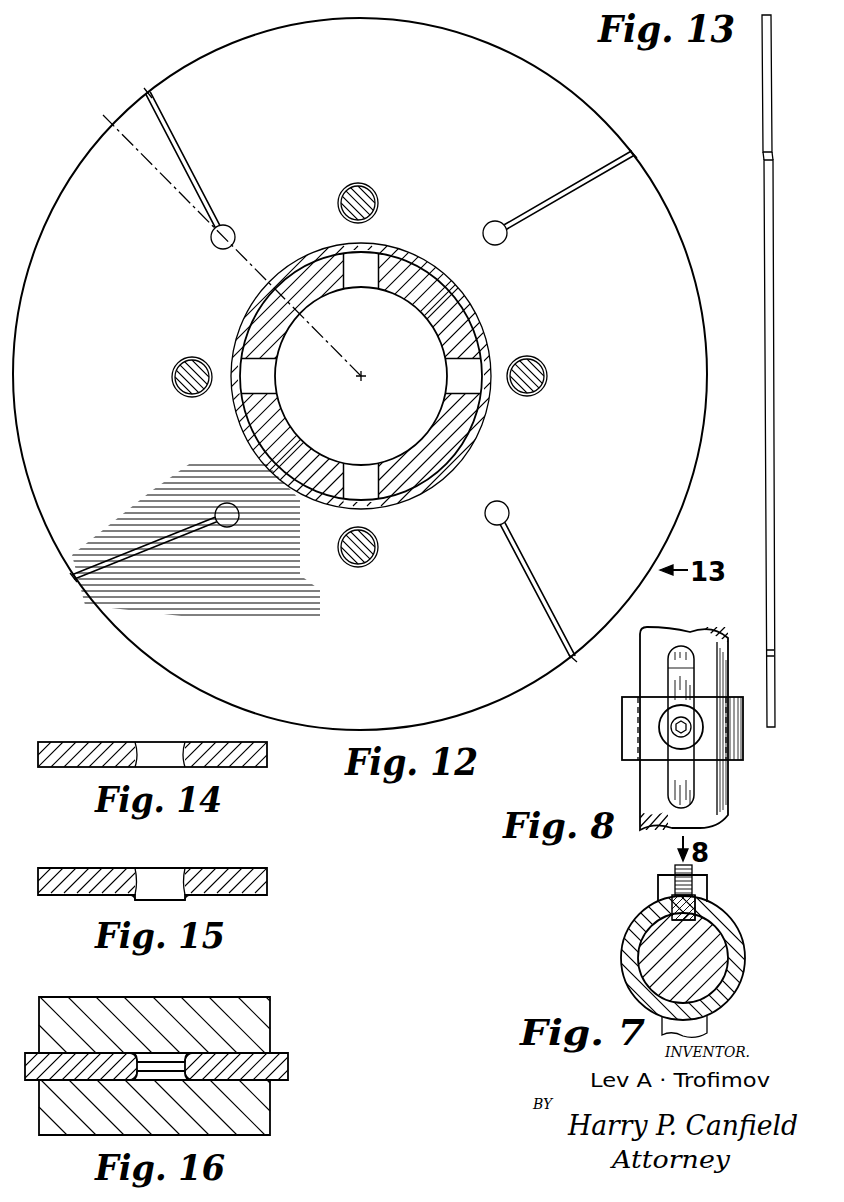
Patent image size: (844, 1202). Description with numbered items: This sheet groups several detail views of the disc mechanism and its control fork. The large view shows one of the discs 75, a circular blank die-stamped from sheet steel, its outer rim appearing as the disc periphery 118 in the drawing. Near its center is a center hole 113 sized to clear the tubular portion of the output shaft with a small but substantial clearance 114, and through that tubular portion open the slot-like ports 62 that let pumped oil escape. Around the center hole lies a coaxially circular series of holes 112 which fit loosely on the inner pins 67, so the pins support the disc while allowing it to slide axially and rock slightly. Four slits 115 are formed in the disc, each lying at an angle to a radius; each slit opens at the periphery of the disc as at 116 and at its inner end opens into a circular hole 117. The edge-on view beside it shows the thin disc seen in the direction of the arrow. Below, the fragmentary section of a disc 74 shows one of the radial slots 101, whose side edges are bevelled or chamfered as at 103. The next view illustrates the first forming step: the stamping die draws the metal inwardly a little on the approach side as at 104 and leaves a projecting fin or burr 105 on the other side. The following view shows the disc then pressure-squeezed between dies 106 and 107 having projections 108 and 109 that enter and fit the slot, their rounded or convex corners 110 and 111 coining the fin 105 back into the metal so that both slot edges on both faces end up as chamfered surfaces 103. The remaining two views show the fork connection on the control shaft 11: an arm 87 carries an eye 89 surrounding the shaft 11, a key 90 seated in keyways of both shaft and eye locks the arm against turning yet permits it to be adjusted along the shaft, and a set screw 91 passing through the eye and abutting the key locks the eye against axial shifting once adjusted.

In FIG. 8, the control shaft 11 is at (646, 657).
In FIG. 7, the control shaft 11 is at (715, 948).
In FIG. 12, the slot-like ports 62 is at (364, 281).
In FIG. 12, the inner pins 67 is at (374, 208).
In FIG. 13, the disc 74 is at (768, 371).
In FIG. 14, the disc 74 is at (201, 748).
In FIG. 12, the disc 75 is at (677, 522).
In FIG. 7, the arm 87 is at (700, 1031).
In FIG. 8, the eye 89 is at (744, 745).
In FIG. 7, the eye 89 is at (740, 973).
In FIG. 8, the key 90 is at (681, 773).
In FIG. 7, the key 90 is at (696, 906).
In FIG. 8, the set screw 91 is at (672, 727).
In FIG. 7, the set screw 91 is at (675, 866).
In FIG. 14, the radial slots 101 is at (152, 752).
In FIG. 14, the chamfered surfaces 103 is at (135, 741).
In FIG. 16, the chamfered surfaces 103 is at (125, 1064).
In FIG. 15, the drawn-in metal 104 is at (133, 867).
In FIG. 15, the fin or burr 105 is at (137, 897).
In FIG. 16, the die 106 is at (269, 1041).
In FIG. 16, the die 107 is at (260, 1109).
In FIG. 16, the projection 108 is at (143, 1060).
In FIG. 16, the projection 109 is at (143, 1073).
In FIG. 16, the rounded corner 110 is at (135, 1052).
In FIG. 16, the rounded corner 111 is at (143, 1082).
In FIG. 12, the holes 112 is at (373, 195).
In FIG. 12, the center hole 113 is at (397, 253).
In FIG. 12, the clearance 114 is at (433, 276).
In FIG. 12, the slits 115 is at (171, 138).
In FIG. 12, the slit periphery opening 116 is at (148, 91).
In FIG. 12, the circular holes 117 is at (231, 231).
In FIG. 12, the disk 118 is at (194, 62).